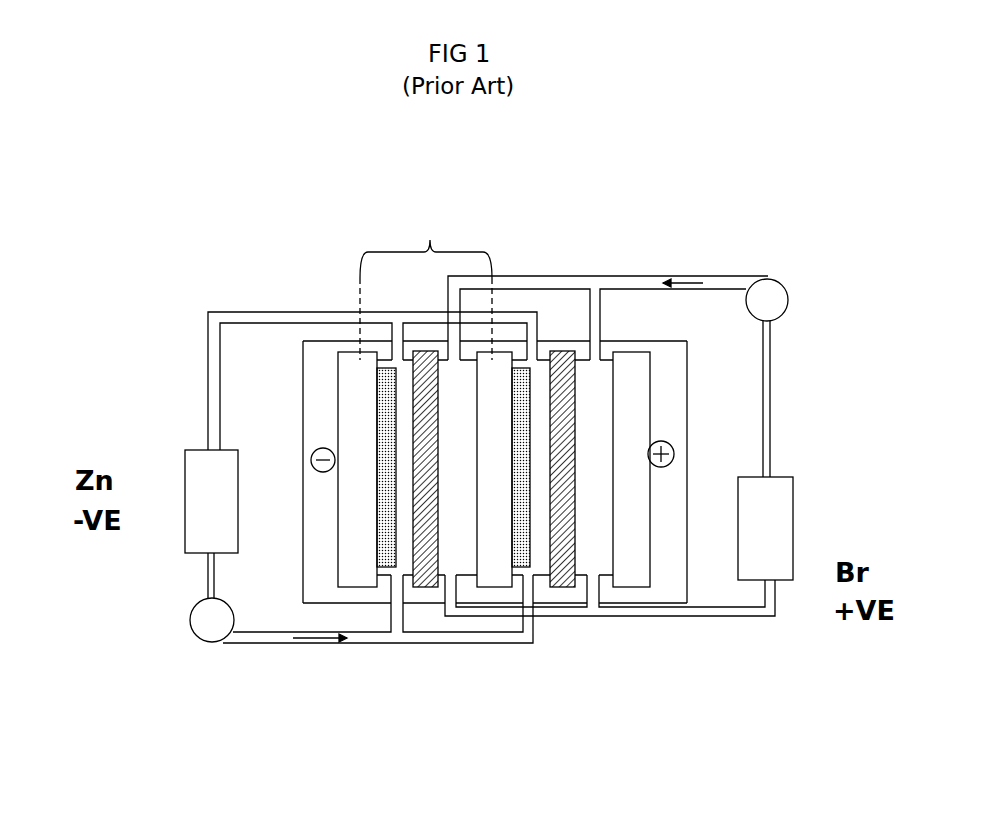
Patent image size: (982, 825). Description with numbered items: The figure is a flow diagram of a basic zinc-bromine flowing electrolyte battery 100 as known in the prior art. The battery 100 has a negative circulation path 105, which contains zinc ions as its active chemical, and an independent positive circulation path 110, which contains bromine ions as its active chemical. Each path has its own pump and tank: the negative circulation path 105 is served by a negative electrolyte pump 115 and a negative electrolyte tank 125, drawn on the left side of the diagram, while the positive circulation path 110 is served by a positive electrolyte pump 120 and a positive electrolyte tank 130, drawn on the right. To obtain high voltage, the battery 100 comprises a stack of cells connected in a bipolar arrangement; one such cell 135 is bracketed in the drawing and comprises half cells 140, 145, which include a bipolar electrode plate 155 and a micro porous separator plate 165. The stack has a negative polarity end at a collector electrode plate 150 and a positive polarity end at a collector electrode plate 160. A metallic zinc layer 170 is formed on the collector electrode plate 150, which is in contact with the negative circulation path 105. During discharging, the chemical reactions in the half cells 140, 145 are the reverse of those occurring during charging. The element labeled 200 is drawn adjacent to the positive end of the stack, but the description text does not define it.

The zinc-bromine flowing electrolyte battery 100 is at (108, 260).
The negative circulation path 105 is at (302, 320).
The positive circulation path 110 is at (637, 283).
The negative electrolyte pump 115 is at (203, 620).
The positive electrolyte pump 120 is at (768, 302).
The negative electrolyte tank 125 is at (210, 493).
The positive electrolyte tank 130 is at (770, 538).
The cell 135 is at (430, 240).
The half cell 140 is at (380, 590).
The half cell 145 is at (463, 590).
The collector electrode plate 150 is at (350, 428).
The bipolar electrode plate 155 is at (497, 565).
The collector electrode plate 160 is at (636, 386).
The micro porous separator plate 165 is at (422, 588).
The metallic zinc layer 170 is at (385, 548).
The cell stack housing 200 is at (688, 450).